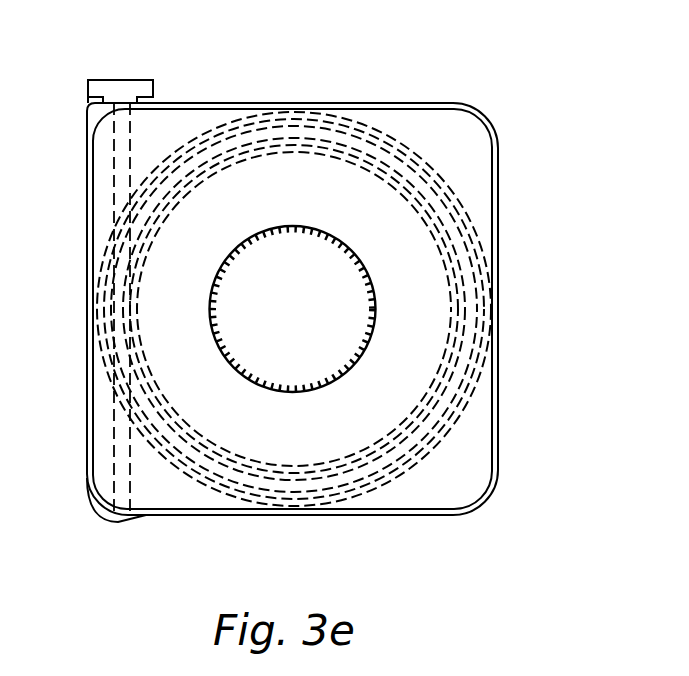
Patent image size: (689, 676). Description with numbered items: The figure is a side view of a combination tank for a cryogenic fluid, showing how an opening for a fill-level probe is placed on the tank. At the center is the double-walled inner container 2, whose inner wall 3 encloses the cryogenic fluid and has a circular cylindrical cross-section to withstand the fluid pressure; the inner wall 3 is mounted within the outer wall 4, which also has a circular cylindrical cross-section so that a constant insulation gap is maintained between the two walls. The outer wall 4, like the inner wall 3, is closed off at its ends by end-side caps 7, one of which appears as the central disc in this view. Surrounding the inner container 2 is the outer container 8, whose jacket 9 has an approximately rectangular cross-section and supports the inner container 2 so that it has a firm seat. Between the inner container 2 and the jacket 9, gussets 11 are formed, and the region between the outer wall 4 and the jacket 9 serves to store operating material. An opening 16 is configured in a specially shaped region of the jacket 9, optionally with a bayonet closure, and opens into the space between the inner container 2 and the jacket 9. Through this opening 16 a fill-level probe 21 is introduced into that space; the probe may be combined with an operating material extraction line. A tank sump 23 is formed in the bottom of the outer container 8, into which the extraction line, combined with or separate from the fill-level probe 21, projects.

The inner container 2 is at (400, 215).
The inner wall 3 is at (433, 400).
The outer wall 4 is at (227, 123).
The end-side cap 7 is at (293, 303).
The outer container 8 is at (438, 138).
The jacket 9 is at (345, 105).
The gussets 11 is at (442, 477).
The opening 16 is at (100, 100).
The fill-level probe 21 is at (122, 455).
The tank sump 23 is at (97, 504).